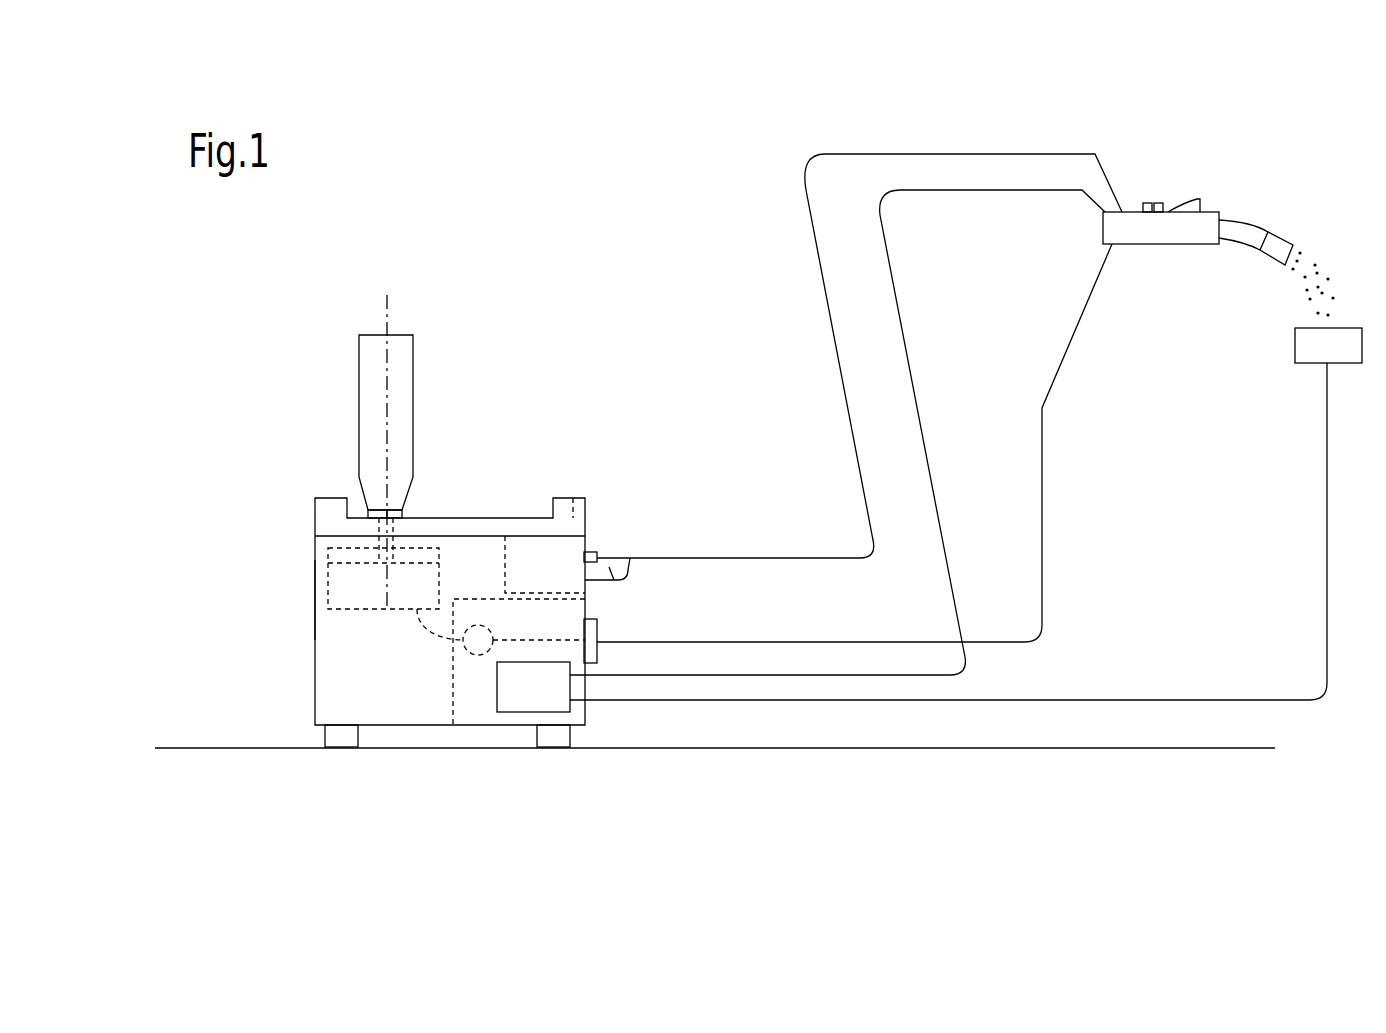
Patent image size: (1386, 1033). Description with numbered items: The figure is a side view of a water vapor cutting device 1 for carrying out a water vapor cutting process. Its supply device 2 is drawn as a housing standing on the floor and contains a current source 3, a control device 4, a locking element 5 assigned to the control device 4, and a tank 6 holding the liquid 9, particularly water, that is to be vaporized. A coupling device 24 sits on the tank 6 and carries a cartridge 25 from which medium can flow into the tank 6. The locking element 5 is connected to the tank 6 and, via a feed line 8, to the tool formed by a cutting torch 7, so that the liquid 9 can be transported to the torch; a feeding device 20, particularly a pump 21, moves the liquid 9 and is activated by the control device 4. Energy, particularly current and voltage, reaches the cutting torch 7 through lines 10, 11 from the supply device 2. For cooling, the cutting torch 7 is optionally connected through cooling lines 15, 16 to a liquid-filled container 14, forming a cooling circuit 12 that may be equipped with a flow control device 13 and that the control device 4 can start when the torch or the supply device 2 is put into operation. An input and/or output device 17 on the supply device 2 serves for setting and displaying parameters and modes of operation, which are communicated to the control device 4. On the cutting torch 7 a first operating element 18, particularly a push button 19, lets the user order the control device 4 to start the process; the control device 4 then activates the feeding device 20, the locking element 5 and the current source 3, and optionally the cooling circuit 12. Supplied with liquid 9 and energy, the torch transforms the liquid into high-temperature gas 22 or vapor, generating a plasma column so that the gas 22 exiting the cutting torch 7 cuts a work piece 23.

The water vapor cutting device 1 is at (657, 258).
The supply device 2 is at (310, 455).
The current source 3 is at (527, 688).
The control device 4 is at (465, 682).
The locking element 5 is at (592, 653).
The tank 6 is at (316, 597).
The cutting torch 7 is at (1210, 180).
The feed line 8 is at (826, 628).
The liquid 9 is at (350, 583).
The line 10 is at (1044, 543).
The line 11 is at (1323, 545).
The cooling circuit 12 is at (614, 524).
The flow control device 13 is at (592, 551).
The liquid-filled container 14 is at (543, 560).
The cooling line 15 is at (616, 558).
The cooling line 16 is at (640, 560).
The input and/or output device 17 is at (573, 518).
The first operating element 18 is at (1175, 178).
The push button 19 is at (1195, 215).
The feeding device 20 is at (463, 653).
The pump 21 is at (462, 641).
The gas 22 is at (1298, 220).
The work piece 23 is at (1305, 344).
The coupling device 24 is at (415, 509).
The cartridge 25 is at (430, 346).